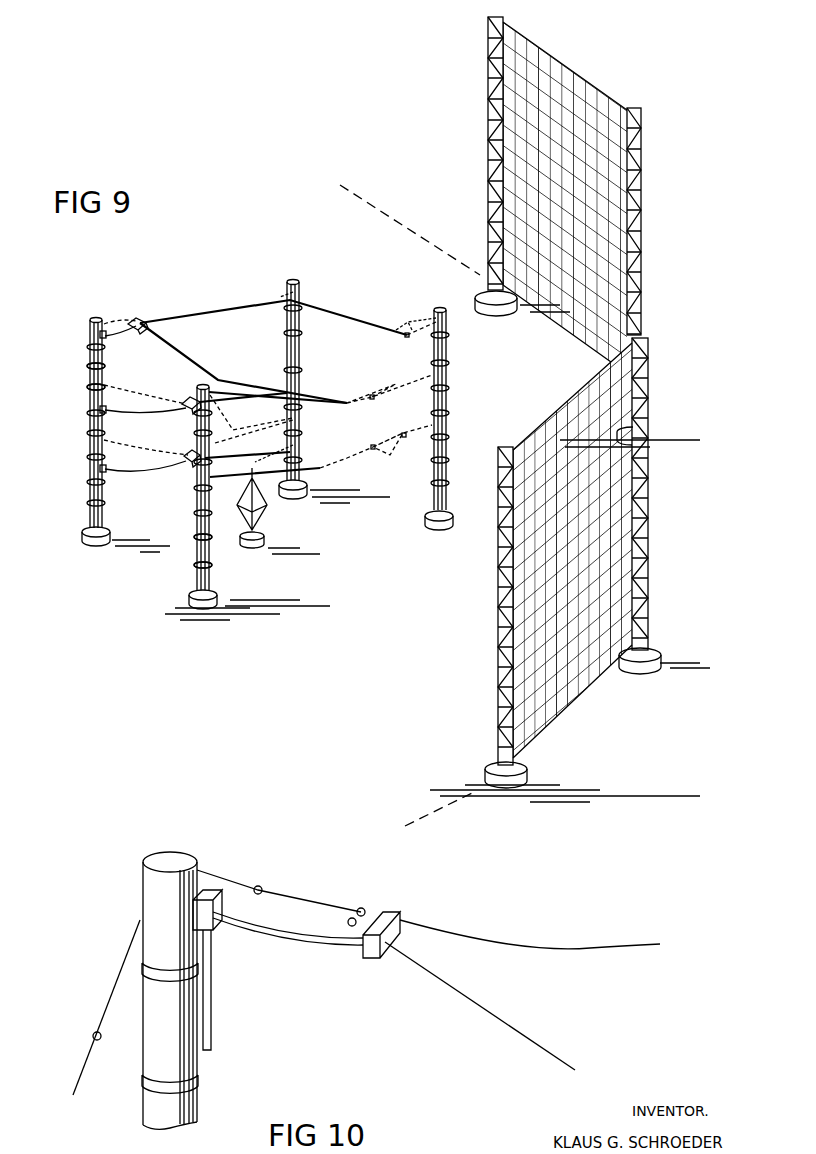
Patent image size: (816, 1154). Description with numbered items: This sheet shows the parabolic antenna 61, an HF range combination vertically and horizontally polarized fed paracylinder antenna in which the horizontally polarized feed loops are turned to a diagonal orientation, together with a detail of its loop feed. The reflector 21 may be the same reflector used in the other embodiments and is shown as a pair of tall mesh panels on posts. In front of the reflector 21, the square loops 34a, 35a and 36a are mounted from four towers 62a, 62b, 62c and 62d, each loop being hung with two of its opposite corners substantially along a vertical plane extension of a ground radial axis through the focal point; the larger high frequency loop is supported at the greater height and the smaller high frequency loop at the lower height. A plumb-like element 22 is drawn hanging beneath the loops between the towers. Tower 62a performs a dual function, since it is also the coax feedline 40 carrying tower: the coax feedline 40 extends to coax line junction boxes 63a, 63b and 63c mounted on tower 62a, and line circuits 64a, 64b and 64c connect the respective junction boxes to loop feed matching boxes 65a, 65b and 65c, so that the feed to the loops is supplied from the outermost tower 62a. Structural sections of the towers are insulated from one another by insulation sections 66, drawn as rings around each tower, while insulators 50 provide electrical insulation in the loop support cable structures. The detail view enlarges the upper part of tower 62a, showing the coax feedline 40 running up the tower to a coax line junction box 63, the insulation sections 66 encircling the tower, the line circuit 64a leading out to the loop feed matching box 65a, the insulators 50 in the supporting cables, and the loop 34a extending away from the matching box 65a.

In FIG. 9, the reflector 21 is at (596, 80).
In FIG. 9, the parabolic antenna 61 is at (681, 106).
In FIG. 9, the plumb bob 22 is at (270, 512).
In FIG. 9, the square loop 34a is at (356, 320).
In FIG. 10, the square loop 34a is at (588, 948).
In FIG. 9, the square loop 35a is at (326, 412).
In FIG. 9, the square loop 36a is at (310, 462).
In FIG. 10, the coax feedline 40 is at (212, 1013).
In FIG. 9, the insulator 50 is at (398, 352).
In FIG. 10, the insulator 50 is at (348, 918).
In FIG. 9, the tower 62a is at (90, 497).
In FIG. 10, the tower 62a is at (150, 894).
In FIG. 9, the tower 62b is at (300, 296).
In FIG. 9, the tower 62c is at (447, 462).
In FIG. 9, the tower 62d is at (216, 553).
In FIG. 10, the coax line junction box 63 is at (210, 898).
In FIG. 9, the coax line junction box 63a is at (90, 333).
In FIG. 9, the coax line junction box 63b is at (90, 408).
In FIG. 9, the coax line junction box 63c is at (90, 467).
In FIG. 9, the line circuit 64a is at (128, 342).
In FIG. 10, the line circuit 64a is at (305, 945).
In FIG. 9, the line circuit 64b is at (162, 415).
In FIG. 9, the line circuit 64c is at (144, 480).
In FIG. 9, the loop feed matching box 65a is at (146, 318).
In FIG. 10, the loop feed matching box 65a is at (395, 917).
In FIG. 9, the loop feed matching box 65b is at (192, 396).
In FIG. 9, the loop feed matching box 65c is at (192, 462).
In FIG. 9, the insulation section 66 is at (90, 390).
In FIG. 10, the insulation section 66 is at (141, 1083).